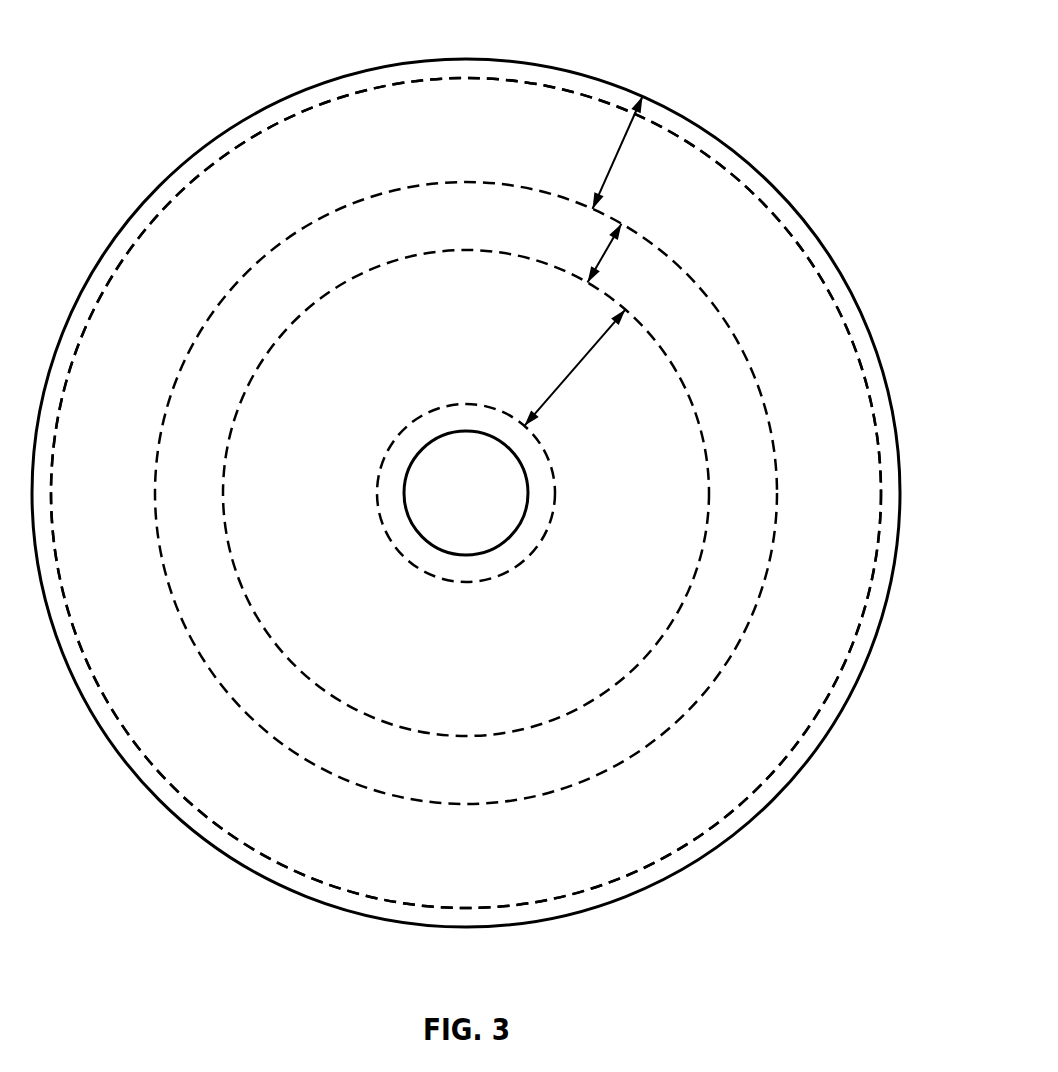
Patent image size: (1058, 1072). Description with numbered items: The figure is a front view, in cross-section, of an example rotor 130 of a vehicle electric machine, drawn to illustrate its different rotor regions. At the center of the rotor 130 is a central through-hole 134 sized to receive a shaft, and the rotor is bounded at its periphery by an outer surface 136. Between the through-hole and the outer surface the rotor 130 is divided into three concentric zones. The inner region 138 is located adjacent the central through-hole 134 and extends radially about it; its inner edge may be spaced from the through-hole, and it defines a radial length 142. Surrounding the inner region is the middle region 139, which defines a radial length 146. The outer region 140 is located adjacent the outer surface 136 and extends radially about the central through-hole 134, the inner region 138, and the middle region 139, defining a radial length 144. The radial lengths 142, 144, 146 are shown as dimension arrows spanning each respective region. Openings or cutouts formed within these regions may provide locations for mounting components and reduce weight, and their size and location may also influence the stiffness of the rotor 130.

The rotor 130 is at (582, 73).
The central through-hole 134 is at (527, 493).
The outer surface 136 is at (692, 122).
The inner region 138 is at (670, 455).
The middle region 139 is at (727, 388).
The outer region 140 is at (737, 220).
The radial length of inner region 142 is at (590, 356).
The radial length of outer region 144 is at (612, 160).
The radial length of middle region 146 is at (601, 250).